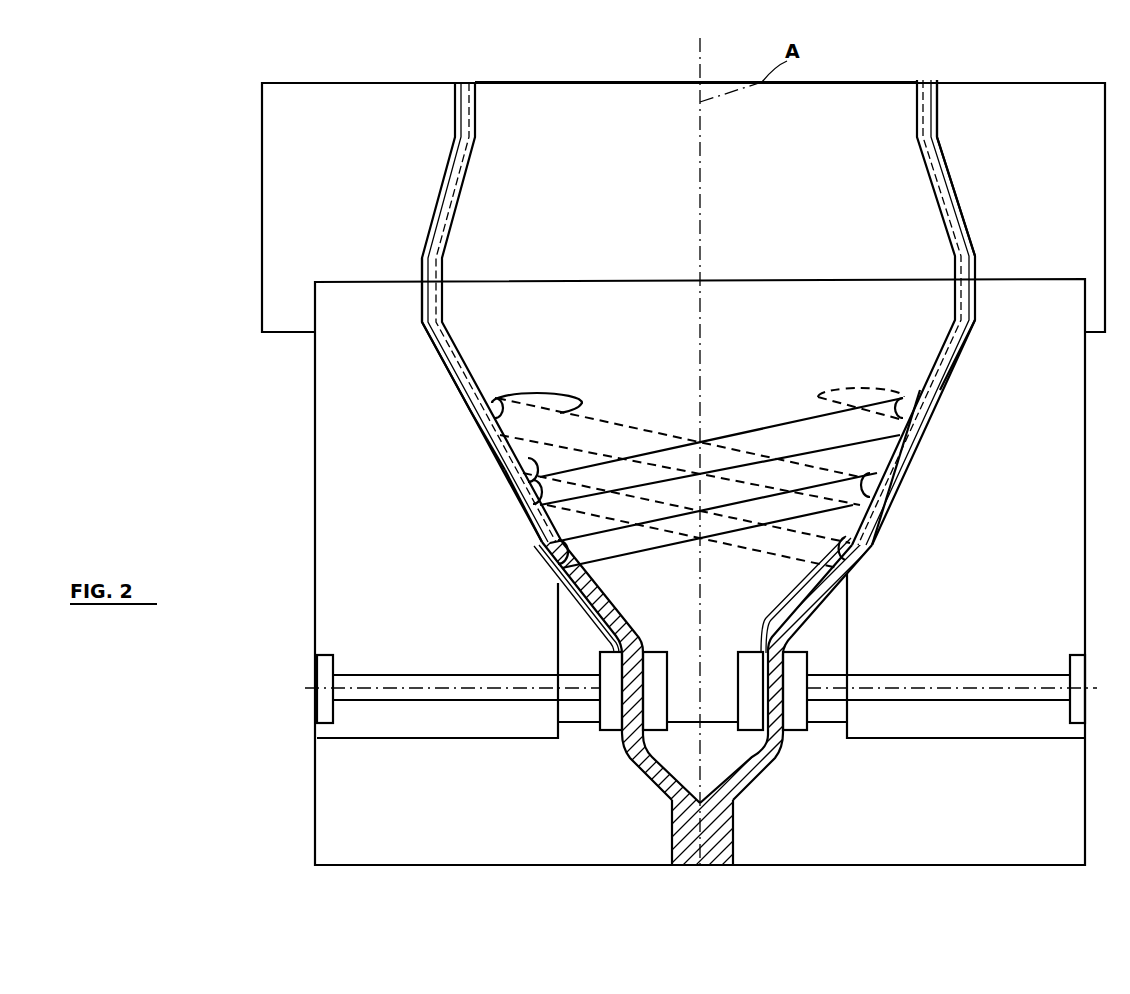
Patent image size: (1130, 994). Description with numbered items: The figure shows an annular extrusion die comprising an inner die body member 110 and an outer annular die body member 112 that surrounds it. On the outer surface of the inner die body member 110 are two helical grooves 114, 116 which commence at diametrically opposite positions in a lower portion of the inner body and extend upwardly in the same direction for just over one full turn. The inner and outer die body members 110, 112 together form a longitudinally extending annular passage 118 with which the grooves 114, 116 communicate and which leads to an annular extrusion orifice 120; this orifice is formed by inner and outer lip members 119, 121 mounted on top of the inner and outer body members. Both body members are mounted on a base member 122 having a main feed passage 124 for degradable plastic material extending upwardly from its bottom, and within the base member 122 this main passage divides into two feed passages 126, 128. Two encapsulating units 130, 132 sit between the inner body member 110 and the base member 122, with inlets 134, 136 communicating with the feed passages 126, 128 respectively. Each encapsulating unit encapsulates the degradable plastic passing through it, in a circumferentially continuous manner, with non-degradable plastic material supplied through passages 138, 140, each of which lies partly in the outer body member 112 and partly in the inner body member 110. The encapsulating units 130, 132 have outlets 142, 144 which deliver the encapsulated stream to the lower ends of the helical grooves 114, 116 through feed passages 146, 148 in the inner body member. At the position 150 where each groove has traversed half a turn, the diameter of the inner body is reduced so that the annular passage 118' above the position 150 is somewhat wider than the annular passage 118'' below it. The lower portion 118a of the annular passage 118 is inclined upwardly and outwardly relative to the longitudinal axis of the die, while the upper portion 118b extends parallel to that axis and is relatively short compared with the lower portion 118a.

The inner die body member 110 is at (622, 295).
The outer annular die body member 112 is at (388, 300).
The helical groove 114 is at (617, 553).
The helical groove 116 is at (792, 425).
The annular passage 118 is at (672, 366).
The lower portion of annular passage 118a is at (515, 505).
The upper portion of annular passage 118b is at (420, 318).
The annular passage above position 150 118' is at (990, 358).
The annular passage below position 150 118'' is at (959, 467).
The inner lip member 119 is at (635, 82).
The annular extrusion orifice 120 is at (912, 82).
The outer lip member 121 is at (415, 82).
The base member 122 is at (345, 805).
The main feed passage 124 is at (677, 833).
The feed passage 126 is at (664, 792).
The feed passage 128 is at (748, 786).
The encapsulating unit 130 is at (598, 652).
The encapsulating unit 132 is at (803, 653).
The inlet 134 is at (618, 735).
The inlet 136 is at (786, 732).
The passage 138 is at (443, 673).
The passage 140 is at (955, 673).
The outlet 142 is at (647, 650).
The outlet 144 is at (760, 652).
The feed passage 146 is at (565, 603).
The feed passage 148 is at (848, 585).
The position 150 is at (506, 467).